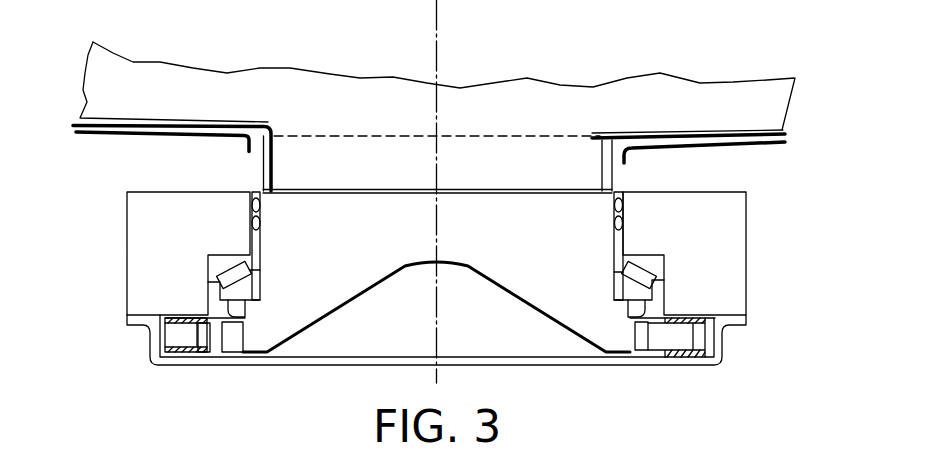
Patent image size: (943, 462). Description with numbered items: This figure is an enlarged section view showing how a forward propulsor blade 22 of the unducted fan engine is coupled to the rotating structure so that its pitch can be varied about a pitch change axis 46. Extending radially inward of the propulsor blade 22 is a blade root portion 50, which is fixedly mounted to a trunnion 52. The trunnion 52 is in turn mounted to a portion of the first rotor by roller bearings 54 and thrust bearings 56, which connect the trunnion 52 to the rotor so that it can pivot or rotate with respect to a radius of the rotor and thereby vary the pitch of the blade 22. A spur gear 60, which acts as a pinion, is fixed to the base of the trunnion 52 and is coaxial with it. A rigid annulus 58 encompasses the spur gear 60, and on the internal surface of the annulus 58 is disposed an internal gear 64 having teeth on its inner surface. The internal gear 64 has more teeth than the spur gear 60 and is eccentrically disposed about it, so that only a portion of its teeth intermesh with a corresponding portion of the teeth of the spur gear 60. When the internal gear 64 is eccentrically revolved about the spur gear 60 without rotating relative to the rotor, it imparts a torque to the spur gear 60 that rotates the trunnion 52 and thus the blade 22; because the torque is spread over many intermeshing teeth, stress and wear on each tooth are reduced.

The forward propulsor blade 22 is at (728, 95).
The pitch change axis 46 is at (438, 44).
The blade root portion 50 is at (334, 153).
The trunnion 52 is at (322, 305).
The roller bearings 54 is at (249, 216).
The thrust bearings 56 is at (221, 259).
The rigid annulus 58 is at (180, 343).
The spur gear 60 is at (229, 343).
The internal gear 64 is at (208, 344).